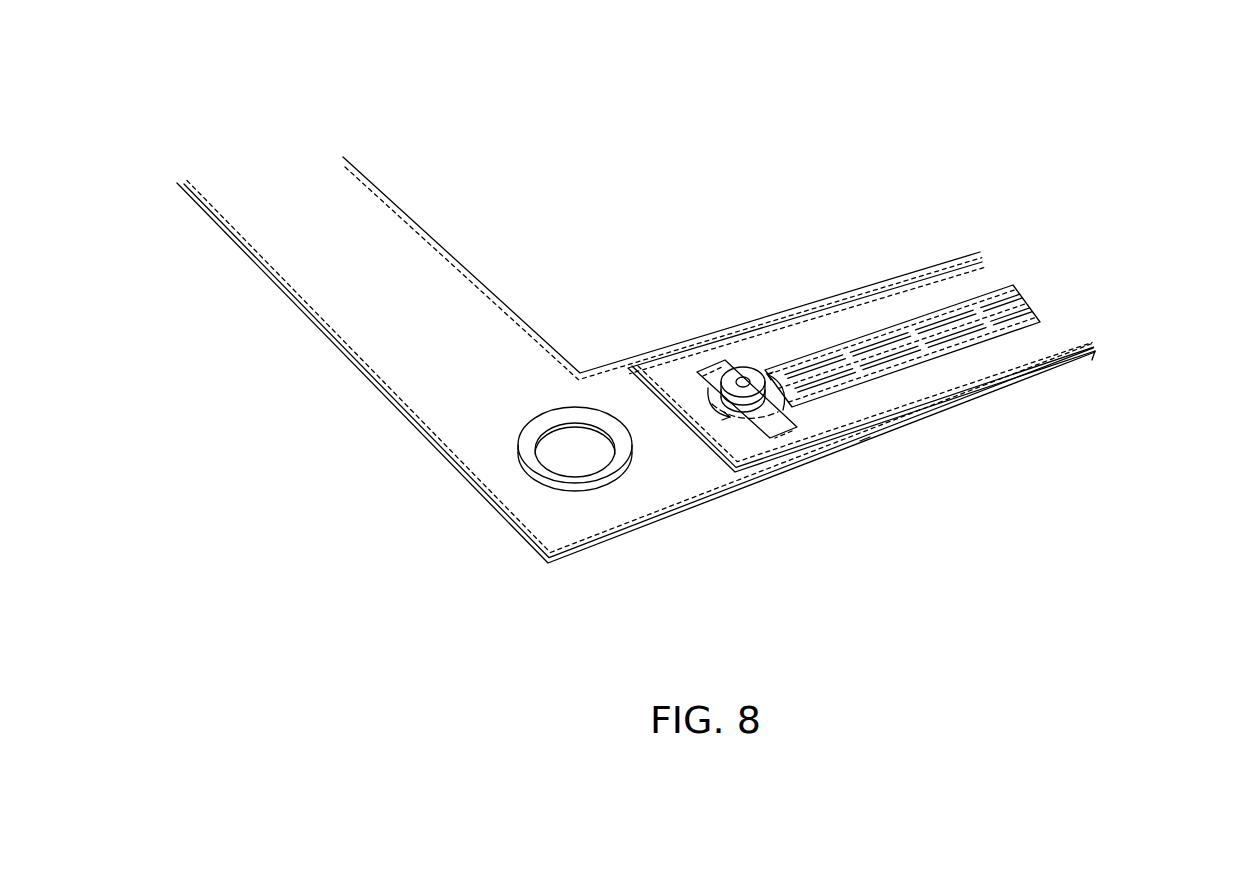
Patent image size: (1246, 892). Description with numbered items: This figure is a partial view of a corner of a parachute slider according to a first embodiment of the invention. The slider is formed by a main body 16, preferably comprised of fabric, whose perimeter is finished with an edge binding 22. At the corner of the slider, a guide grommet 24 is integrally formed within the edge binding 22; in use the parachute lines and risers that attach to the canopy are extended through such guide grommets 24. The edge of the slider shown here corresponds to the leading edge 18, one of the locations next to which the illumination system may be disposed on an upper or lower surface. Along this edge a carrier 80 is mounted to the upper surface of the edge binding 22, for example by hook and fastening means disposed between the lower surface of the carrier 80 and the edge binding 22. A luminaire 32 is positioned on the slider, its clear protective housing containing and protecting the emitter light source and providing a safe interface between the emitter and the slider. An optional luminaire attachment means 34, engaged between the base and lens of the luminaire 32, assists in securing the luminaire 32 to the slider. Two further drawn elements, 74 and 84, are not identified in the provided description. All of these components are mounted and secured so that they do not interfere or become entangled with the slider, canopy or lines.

The main body 16 is at (563, 165).
The leading edge 18 is at (712, 498).
The edge binding 22 is at (598, 518).
The guide grommets 24 is at (540, 492).
The luminaire 32 is at (747, 367).
The luminaire attachment means 34 is at (867, 442).
The attachment strip 74 is at (870, 383).
The carrier 80 is at (968, 390).
The rail 84 is at (1000, 332).